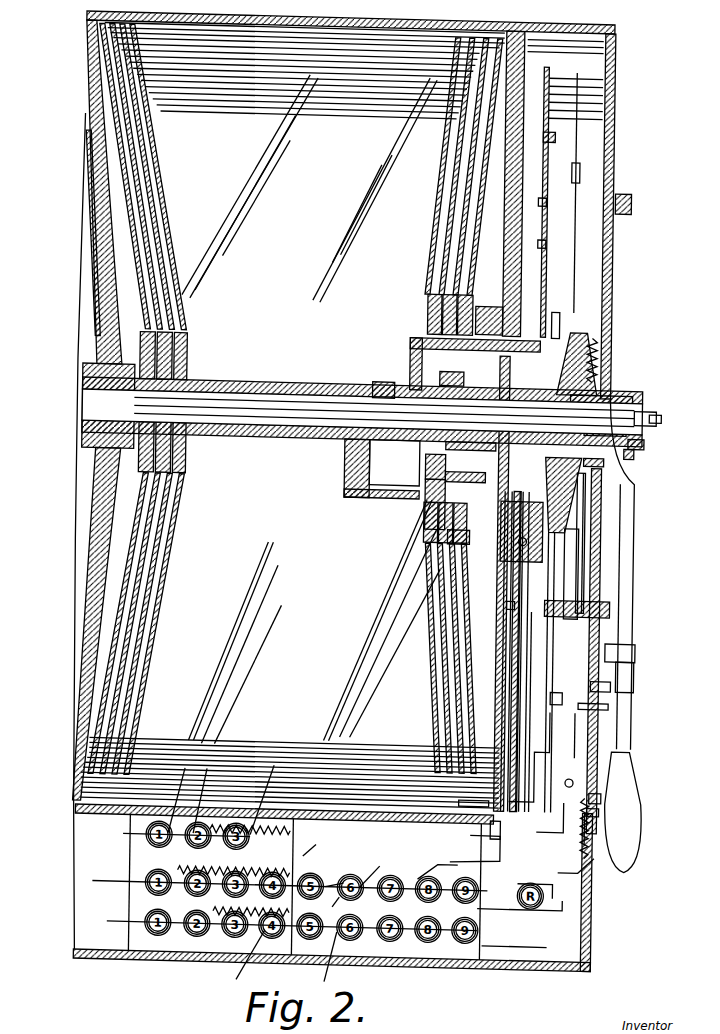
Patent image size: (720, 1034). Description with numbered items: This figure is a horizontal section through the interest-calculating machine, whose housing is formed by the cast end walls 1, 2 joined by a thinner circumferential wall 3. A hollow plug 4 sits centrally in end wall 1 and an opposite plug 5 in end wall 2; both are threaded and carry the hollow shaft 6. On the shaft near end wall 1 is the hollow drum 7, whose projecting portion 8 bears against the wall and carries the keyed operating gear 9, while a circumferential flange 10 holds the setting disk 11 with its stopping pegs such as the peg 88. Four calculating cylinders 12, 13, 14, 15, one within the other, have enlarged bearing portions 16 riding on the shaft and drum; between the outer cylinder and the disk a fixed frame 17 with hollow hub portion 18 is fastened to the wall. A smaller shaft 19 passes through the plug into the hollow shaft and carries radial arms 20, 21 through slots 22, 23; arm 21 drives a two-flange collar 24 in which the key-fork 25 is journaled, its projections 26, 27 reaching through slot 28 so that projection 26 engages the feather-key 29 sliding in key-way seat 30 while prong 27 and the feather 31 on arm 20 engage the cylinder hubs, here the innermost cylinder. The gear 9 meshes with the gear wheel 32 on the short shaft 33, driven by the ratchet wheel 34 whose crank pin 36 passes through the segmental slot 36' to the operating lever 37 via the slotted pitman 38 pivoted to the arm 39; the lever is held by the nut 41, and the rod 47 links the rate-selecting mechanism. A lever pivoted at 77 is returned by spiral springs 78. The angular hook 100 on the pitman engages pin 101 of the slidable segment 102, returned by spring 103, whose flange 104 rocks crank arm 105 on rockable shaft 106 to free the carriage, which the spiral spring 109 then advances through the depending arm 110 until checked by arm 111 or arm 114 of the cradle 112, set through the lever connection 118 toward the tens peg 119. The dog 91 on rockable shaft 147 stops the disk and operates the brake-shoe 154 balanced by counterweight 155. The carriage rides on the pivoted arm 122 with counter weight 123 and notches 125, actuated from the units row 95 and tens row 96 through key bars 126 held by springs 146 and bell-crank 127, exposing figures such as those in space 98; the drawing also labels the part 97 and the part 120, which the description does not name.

The end wall 1 is at (614, 90).
The end wall 2 is at (87, 115).
The circumferential wall 3 is at (352, 18).
The hollow plug 4 is at (632, 410).
The plug 5 is at (86, 407).
The hollow shaft 6 is at (265, 388).
The hollow drum 7 is at (565, 370).
The projecting portion 8 is at (624, 396).
The operating gear 9 is at (602, 372).
The circumferential flange 10 is at (566, 326).
The setting disk 11 is at (545, 280).
The calculating cylinder 12 is at (478, 180).
The calculating cylinder 13 is at (466, 195).
The calculating cylinder 14 is at (452, 210).
The calculating cylinder 15 is at (438, 228).
The enlarged bearing portion 16 is at (432, 306).
The fixed frame 17 is at (505, 268).
The hollow hub portion 18 is at (482, 317).
The shaft 19 is at (384, 395).
The radial arm 20 is at (345, 476).
The radial arm 21 is at (456, 443).
The slot 22 is at (386, 441).
The slot 23 is at (499, 442).
The two-flange collar 24 is at (468, 379).
The key-fork 25 is at (412, 352).
The projection 26 is at (488, 472).
The projection 27 is at (428, 502).
The slot 28 is at (600, 490).
The feather-key 29 is at (462, 522).
The key-way seat 30 is at (585, 515).
The feather 31 is at (400, 497).
The gear wheel 32 is at (582, 572).
The short shaft 33 is at (606, 610).
The ratchet wheel 34 is at (586, 548).
The crank pin 36 is at (634, 706).
The segmental slot 36' is at (644, 686).
The operating lever 37 is at (632, 590).
The slotted pitman 38 is at (555, 692).
The arm 39 is at (641, 662).
The nut 41 is at (642, 442).
The rod 47 is at (660, 424).
The pivot 77 is at (632, 206).
The spiral springs 78 is at (605, 350).
The stopping peg 88 is at (558, 135).
The dog 91 is at (512, 720).
The units row 95 is at (328, 967).
The tens row 96 is at (333, 881).
The key lever 97 is at (195, 790).
The space 98 is at (470, 832).
The angular hook 100 is at (634, 645).
The pin 101 is at (582, 715).
The slidable segment 102 is at (588, 735).
The spring 103 is at (592, 816).
The inwardly-projecting flange 104 is at (594, 802).
The crank arm 105 is at (604, 790).
The rockable shaft 106 is at (572, 776).
The spiral spring 109 is at (500, 675).
The depending arm 110 is at (455, 858).
The arm 111 is at (600, 862).
The cradle 112 is at (500, 836).
The arm 114 is at (480, 800).
The lever connection 118 is at (385, 864).
The tens peg 119 is at (612, 846).
The plate 120 is at (548, 100).
The pivoted arm 122 is at (542, 200).
The counter weight 123 is at (543, 244).
The notches 125 is at (553, 882).
The key bar 126 is at (330, 853).
The bell-crank 127 is at (520, 902).
The springs 146 is at (272, 871).
The rockable shaft 147 is at (505, 700).
The brake-shoe 154 is at (522, 752).
The counterweight 155 is at (640, 832).